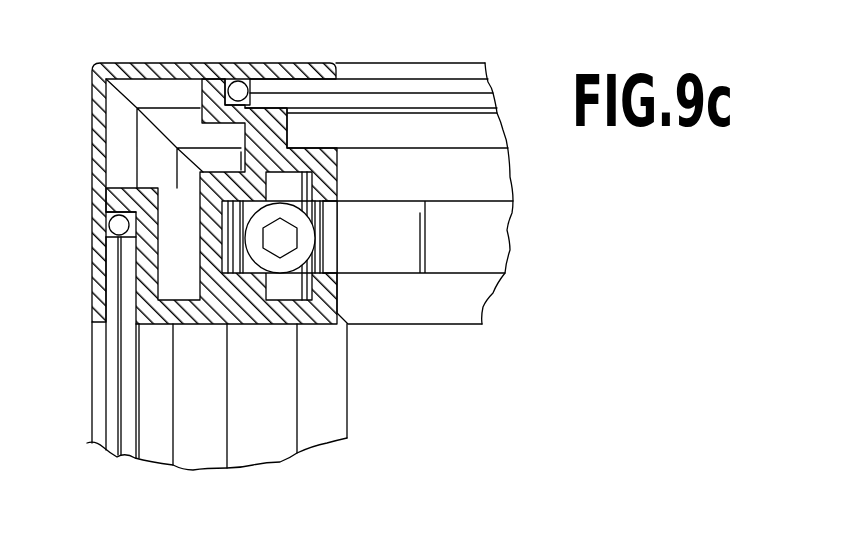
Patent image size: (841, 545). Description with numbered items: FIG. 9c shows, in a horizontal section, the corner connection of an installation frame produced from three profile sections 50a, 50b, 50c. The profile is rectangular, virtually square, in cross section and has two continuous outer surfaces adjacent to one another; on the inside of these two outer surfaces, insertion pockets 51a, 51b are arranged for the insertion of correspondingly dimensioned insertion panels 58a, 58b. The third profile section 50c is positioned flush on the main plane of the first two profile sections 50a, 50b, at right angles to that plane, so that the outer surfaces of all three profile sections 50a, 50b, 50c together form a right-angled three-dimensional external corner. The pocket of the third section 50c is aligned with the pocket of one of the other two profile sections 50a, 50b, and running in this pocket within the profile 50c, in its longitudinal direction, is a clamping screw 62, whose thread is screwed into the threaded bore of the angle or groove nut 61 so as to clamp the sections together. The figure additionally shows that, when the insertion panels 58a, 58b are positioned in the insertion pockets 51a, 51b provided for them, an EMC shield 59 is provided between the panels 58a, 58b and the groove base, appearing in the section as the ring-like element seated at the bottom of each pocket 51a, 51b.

The profile section 50a is at (190, 480).
The profile section 50b is at (537, 245).
The third profile section 50c is at (207, 68).
The insertion pocket 51a is at (108, 224).
The insertion pocket 51b is at (224, 90).
The insertion panel 58a is at (110, 364).
The insertion panel 58b is at (397, 88).
The EMC shield 59 is at (243, 83).
The groove nut 61 is at (403, 212).
The clamping screw 62 is at (287, 231).